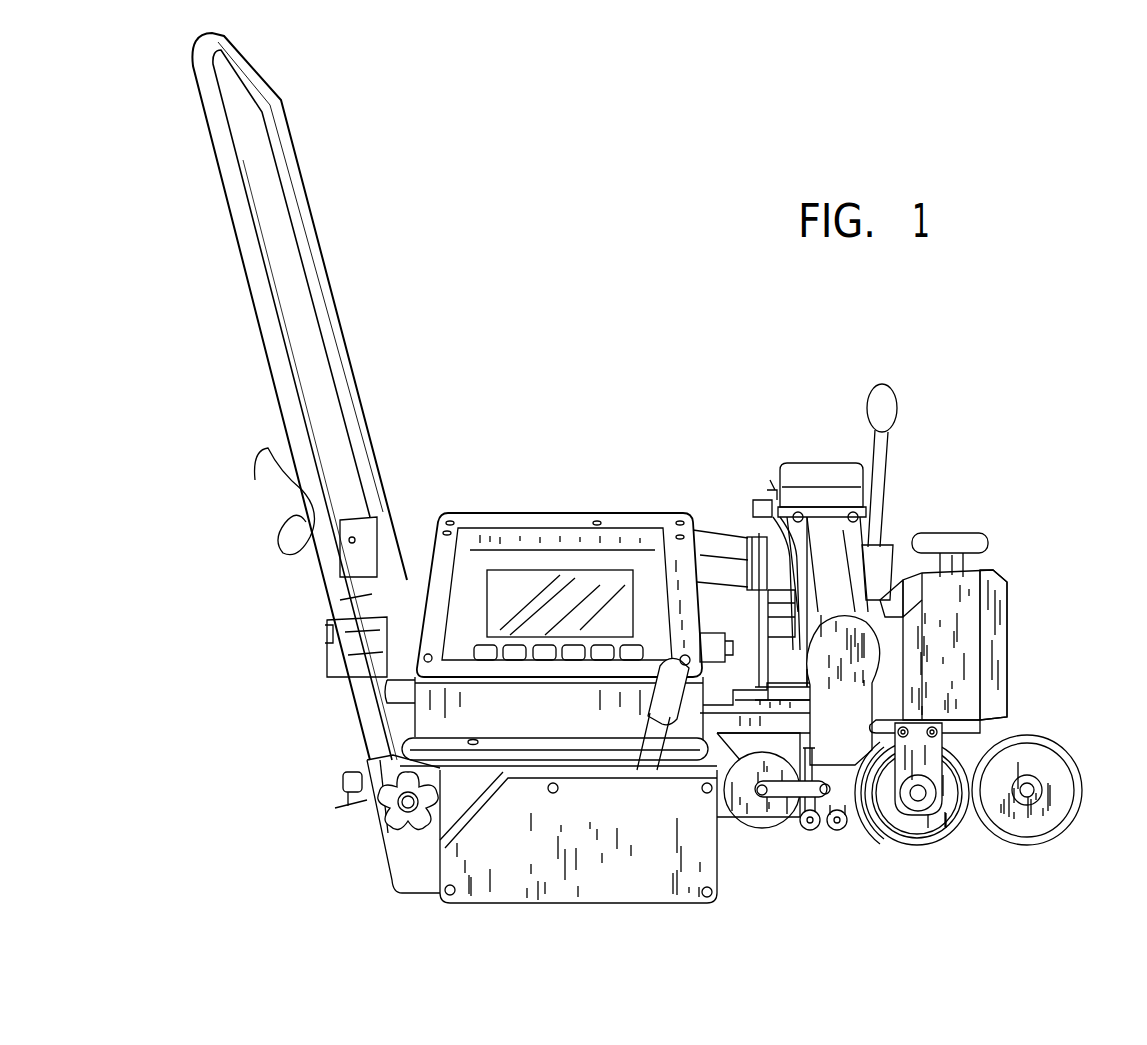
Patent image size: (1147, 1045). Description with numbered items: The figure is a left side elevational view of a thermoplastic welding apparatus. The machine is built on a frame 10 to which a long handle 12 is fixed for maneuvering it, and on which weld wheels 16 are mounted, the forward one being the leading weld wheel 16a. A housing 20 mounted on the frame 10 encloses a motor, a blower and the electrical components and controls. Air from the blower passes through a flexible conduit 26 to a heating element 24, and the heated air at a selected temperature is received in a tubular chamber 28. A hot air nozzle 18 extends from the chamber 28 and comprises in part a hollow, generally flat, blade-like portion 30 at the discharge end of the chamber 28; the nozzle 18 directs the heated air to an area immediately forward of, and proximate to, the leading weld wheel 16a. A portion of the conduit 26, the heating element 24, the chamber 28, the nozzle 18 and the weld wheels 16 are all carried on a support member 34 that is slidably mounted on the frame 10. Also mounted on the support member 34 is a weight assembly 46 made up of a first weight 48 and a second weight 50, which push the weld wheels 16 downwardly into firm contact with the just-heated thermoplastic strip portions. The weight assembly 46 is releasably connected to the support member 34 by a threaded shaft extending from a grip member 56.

The frame 10 is at (560, 723).
The handle 12 is at (238, 202).
The weld wheels 16 is at (1082, 790).
The leading weld wheel 16a is at (945, 818).
The hot air nozzle 18 is at (852, 822).
The housing 20 is at (550, 513).
The heating element 24 is at (822, 467).
The flexible conduit 26 is at (720, 532).
The tubular chamber 28 is at (850, 568).
The blade-like portion 30 is at (888, 750).
The support member 34 is at (965, 730).
The weight assembly 46 is at (1030, 578).
The first weight 48 is at (955, 637).
The second weight 50 is at (1008, 665).
The grip member 56 is at (962, 533).